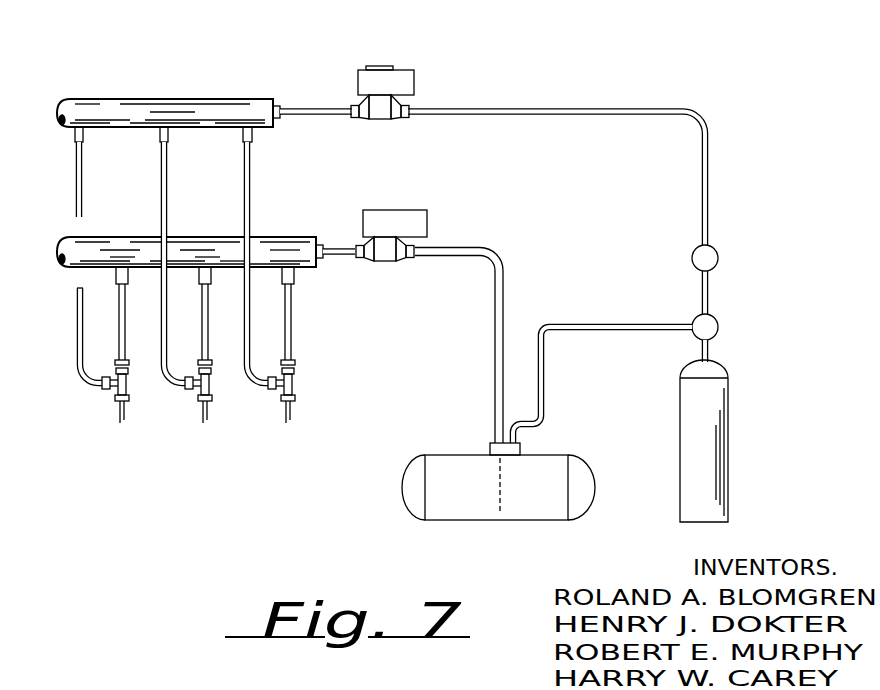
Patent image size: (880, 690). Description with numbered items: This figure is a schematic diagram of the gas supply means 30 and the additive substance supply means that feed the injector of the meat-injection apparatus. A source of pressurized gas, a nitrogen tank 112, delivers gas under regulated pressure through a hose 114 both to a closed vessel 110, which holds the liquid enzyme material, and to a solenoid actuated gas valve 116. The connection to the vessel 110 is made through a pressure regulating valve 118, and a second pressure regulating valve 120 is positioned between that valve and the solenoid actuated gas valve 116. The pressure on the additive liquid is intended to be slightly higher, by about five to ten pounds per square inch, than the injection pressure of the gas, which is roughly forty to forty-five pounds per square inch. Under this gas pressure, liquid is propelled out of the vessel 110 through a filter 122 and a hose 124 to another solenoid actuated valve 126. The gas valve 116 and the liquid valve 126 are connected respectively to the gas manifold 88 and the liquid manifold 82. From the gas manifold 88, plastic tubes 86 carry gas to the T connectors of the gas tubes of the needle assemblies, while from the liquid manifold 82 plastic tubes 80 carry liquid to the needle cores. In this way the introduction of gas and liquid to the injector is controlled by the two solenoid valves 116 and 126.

The gas manifold 88 is at (104, 99).
The liquid manifold 82 is at (128, 238).
The plastic tube 86 is at (250, 194).
The plastic tube 80 is at (292, 344).
The solenoid actuated gas valve 116 is at (414, 81).
The solenoid actuated valve 126 is at (427, 226).
The hose 124 is at (494, 360).
The filter 122 is at (490, 446).
The closed vessel 110 is at (482, 464).
The second pressure regulating valve 120 is at (718, 252).
The pressure regulating valve 118 is at (718, 326).
The hose 114 is at (712, 350).
The nitrogen tank 112 is at (730, 444).
The gas supply means 30 is at (751, 441).